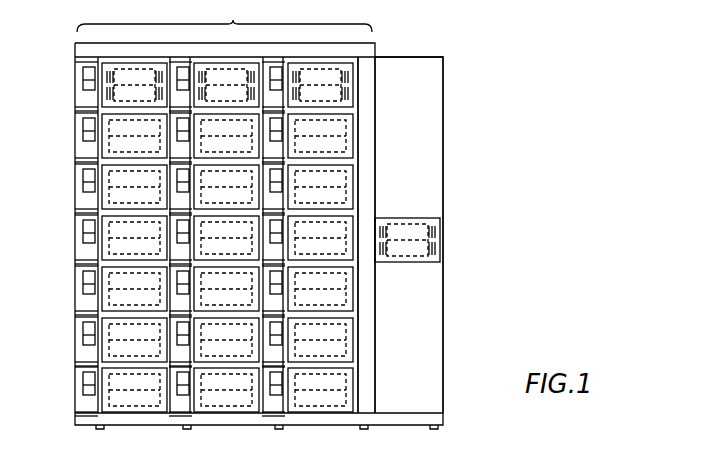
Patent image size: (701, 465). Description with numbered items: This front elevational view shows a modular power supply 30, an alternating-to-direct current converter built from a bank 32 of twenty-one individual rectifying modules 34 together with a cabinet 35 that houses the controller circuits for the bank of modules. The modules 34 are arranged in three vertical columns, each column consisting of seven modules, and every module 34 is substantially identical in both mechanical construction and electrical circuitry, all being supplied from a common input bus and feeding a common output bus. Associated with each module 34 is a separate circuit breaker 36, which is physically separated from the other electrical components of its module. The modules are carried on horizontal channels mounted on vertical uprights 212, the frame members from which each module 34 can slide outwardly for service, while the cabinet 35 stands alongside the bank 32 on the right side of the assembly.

The modular power supply 30 is at (70, 282).
The bank 32 is at (224, 16).
The rectifying module 34 is at (104, 146).
The cabinet 35 is at (433, 57).
The circuit breaker 36 is at (82, 85).
The vertical upright 212 is at (368, 392).